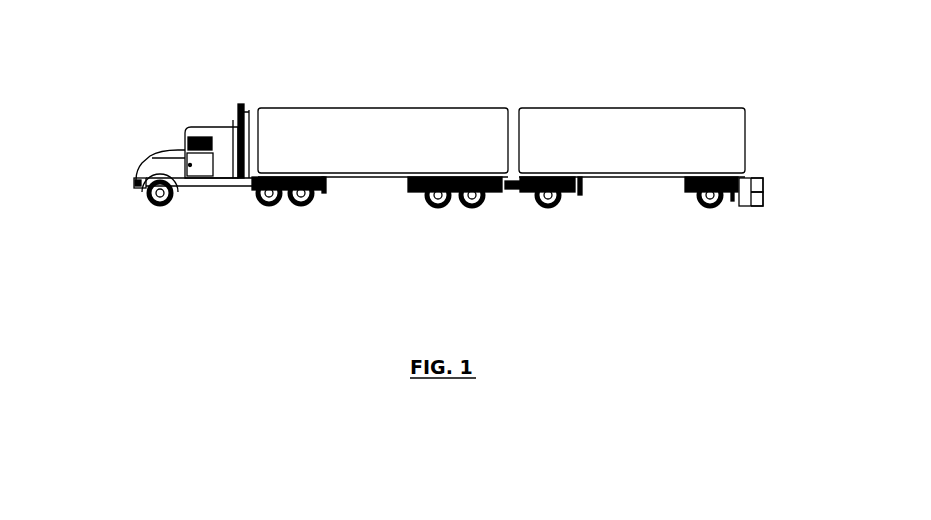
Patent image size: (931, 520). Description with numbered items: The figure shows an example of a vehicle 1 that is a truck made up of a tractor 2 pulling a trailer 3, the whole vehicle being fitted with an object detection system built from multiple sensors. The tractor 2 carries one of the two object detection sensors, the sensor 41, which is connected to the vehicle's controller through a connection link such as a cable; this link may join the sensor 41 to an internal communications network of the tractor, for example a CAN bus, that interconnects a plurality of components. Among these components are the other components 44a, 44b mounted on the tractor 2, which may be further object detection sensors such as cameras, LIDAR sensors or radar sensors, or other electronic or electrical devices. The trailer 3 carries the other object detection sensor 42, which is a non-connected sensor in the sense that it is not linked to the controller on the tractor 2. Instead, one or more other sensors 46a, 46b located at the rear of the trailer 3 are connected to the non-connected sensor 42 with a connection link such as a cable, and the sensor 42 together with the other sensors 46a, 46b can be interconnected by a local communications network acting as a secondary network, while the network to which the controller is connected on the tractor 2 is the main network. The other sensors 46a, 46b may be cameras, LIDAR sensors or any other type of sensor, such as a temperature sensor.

The vehicle 1 is at (435, 178).
The tractor 2 is at (411, 119).
The trailer 3 is at (630, 124).
The sensor 41 is at (232, 173).
The non-connected sensor 42 is at (781, 181).
The component 44a is at (188, 137).
The component 44b is at (137, 183).
The other sensor 46a is at (747, 207).
The other sensor 46b is at (752, 178).